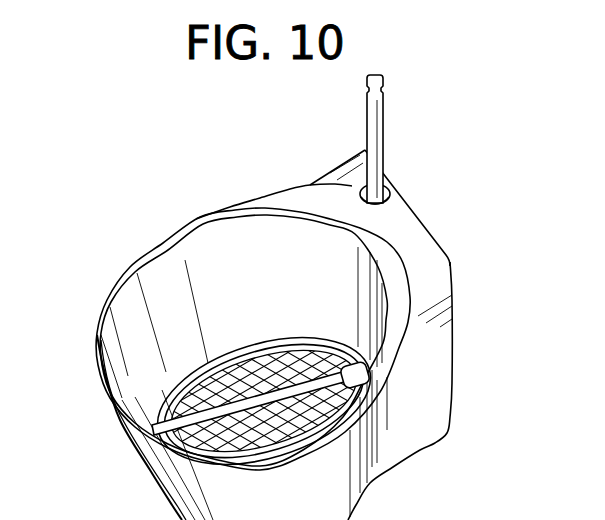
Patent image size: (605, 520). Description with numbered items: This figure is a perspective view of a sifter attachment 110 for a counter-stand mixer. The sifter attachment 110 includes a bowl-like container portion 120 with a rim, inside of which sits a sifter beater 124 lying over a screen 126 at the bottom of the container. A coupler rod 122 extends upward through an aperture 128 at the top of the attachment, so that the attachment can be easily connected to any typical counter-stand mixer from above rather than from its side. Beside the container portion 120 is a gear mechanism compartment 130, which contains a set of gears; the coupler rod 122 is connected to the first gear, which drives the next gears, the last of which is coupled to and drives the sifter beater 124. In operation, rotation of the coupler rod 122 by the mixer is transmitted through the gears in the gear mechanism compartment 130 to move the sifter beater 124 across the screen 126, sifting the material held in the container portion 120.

The sifter attachment 110 is at (78, 224).
The container portion 120 is at (194, 200).
The coupler rod 122 is at (410, 113).
The sifter beater 124 is at (231, 367).
The screen 126 is at (258, 367).
The aperture 128 is at (400, 193).
The gear mechanism compartment 130 is at (486, 327).